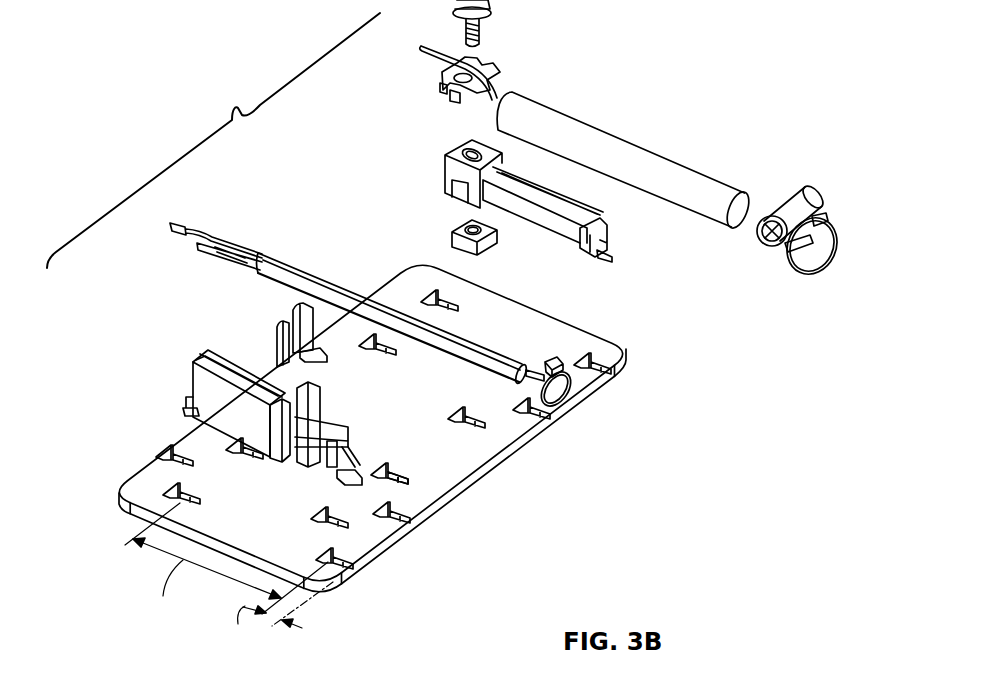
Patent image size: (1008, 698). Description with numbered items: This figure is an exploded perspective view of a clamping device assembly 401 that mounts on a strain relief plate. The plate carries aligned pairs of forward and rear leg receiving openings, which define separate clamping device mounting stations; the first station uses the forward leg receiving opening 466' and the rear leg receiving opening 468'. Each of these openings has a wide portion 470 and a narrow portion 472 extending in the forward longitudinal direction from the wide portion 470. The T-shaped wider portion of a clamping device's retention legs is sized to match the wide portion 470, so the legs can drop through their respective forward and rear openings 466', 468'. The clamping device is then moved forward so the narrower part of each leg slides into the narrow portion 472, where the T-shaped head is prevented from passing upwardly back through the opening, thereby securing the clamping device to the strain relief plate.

The electrical connector assembly 401 is at (200, 80).
The forward leg receiving opening 466' is at (387, 572).
The rear leg receiving opening 468' is at (134, 475).
The wide portion 470 is at (398, 466).
The narrow portion 472 is at (410, 482).